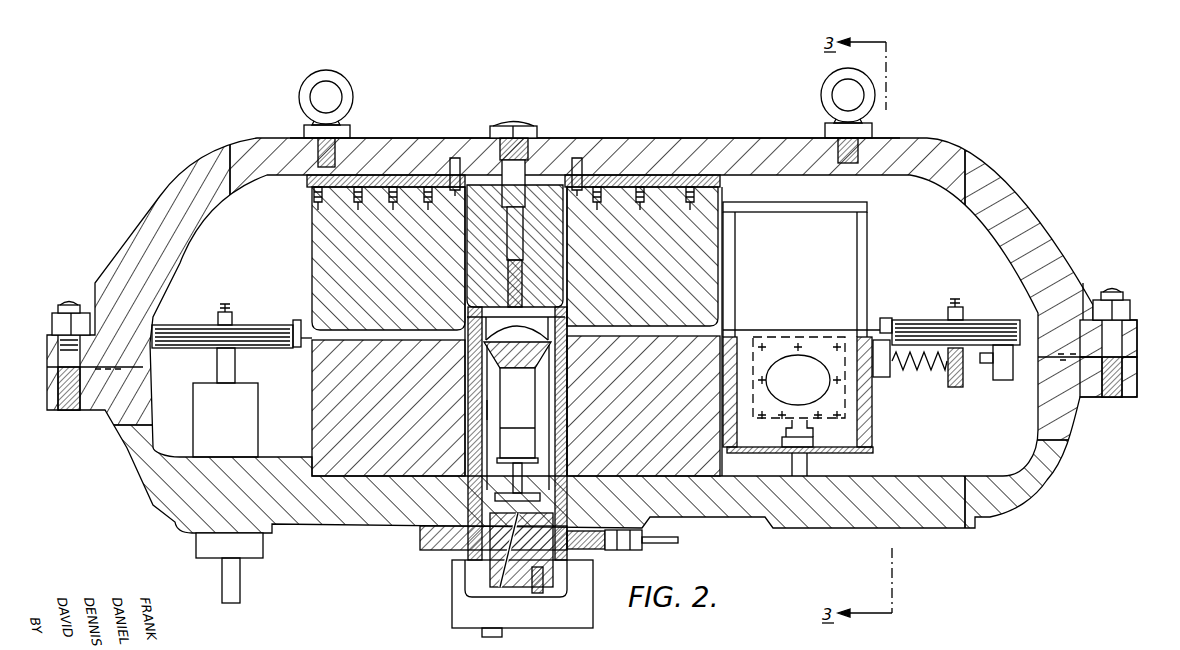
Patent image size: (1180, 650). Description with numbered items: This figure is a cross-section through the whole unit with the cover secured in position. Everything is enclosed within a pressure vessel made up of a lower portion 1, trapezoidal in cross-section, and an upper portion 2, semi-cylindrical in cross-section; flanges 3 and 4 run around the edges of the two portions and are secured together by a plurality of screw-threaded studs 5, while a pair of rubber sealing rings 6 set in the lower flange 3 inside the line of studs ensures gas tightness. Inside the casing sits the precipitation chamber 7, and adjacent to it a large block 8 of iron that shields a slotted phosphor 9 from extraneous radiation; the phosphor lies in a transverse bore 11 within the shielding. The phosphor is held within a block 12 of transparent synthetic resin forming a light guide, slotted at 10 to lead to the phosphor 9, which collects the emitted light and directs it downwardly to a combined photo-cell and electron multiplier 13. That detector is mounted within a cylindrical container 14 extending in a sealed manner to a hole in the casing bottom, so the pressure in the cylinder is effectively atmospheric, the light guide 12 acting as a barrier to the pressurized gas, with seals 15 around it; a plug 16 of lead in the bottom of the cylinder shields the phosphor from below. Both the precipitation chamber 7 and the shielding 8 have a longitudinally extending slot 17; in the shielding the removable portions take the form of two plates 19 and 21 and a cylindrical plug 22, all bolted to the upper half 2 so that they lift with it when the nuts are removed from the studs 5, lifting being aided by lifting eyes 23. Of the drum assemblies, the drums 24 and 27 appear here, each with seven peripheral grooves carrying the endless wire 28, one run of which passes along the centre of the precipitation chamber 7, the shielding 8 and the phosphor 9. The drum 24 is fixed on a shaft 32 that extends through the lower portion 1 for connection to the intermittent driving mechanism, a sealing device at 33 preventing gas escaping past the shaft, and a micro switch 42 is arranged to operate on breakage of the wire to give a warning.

The lower portion 1 is at (933, 518).
The upper portion 2 is at (943, 138).
The flange 3 is at (1130, 377).
The flange 4 is at (1130, 342).
The screw-threaded studs 5 is at (1112, 290).
The rubber sealing rings 6 is at (1066, 360).
The precipitation chamber 7 is at (873, 262).
The block of iron 8 is at (700, 423).
The slotted phosphor 9 is at (495, 322).
The slot 10 is at (545, 322).
The transverse bore 11 is at (465, 435).
The block of transparent synthetic resin 12 is at (517, 413).
The combined photo-cell and electron multiplier 13 is at (517, 421).
The cylindrical container 14 is at (476, 404).
The seals 15 is at (540, 350).
The plug of lead 16 is at (497, 568).
The longitudinally extending slot 17 is at (770, 210).
The plate 19 is at (311, 231).
The plate 21 is at (690, 212).
The cylindrical plug 22 is at (545, 183).
The lifting eyes 23 is at (355, 97).
The drum 24 is at (186, 320).
The drum 27 is at (908, 320).
The wire 28 is at (305, 320).
The shaft 32 is at (218, 363).
The sealing device 33 is at (205, 416).
The micro switch 42 is at (1000, 378).